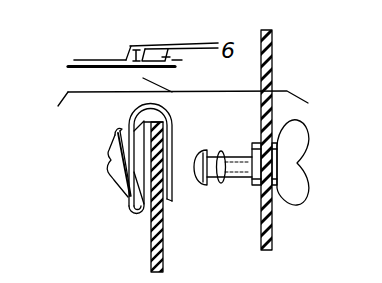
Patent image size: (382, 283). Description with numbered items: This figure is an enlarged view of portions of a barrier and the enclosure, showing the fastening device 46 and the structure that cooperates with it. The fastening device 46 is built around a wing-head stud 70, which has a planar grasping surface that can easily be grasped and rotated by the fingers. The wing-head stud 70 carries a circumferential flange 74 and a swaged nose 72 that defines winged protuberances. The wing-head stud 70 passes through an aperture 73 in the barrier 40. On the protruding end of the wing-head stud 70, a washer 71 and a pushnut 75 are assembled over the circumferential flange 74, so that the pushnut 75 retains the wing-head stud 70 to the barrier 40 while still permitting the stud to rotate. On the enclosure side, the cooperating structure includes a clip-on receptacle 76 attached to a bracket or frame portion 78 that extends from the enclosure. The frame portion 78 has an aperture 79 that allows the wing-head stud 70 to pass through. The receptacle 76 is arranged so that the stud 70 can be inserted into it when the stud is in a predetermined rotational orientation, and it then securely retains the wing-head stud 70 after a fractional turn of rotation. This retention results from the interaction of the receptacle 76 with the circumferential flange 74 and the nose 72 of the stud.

The barrier 40 is at (274, 52).
The fastening device 46 is at (297, 118).
The wing-head stud 70 is at (301, 161).
The washer 71 is at (257, 185).
The swaged nose 72 is at (206, 184).
The aperture 73 is at (268, 187).
The circumferential flange 74 is at (222, 152).
The pushnut 75 is at (252, 183).
The clip-on receptacle 76 is at (135, 213).
The frame portion 78 is at (151, 249).
The aperture 79 is at (164, 151).